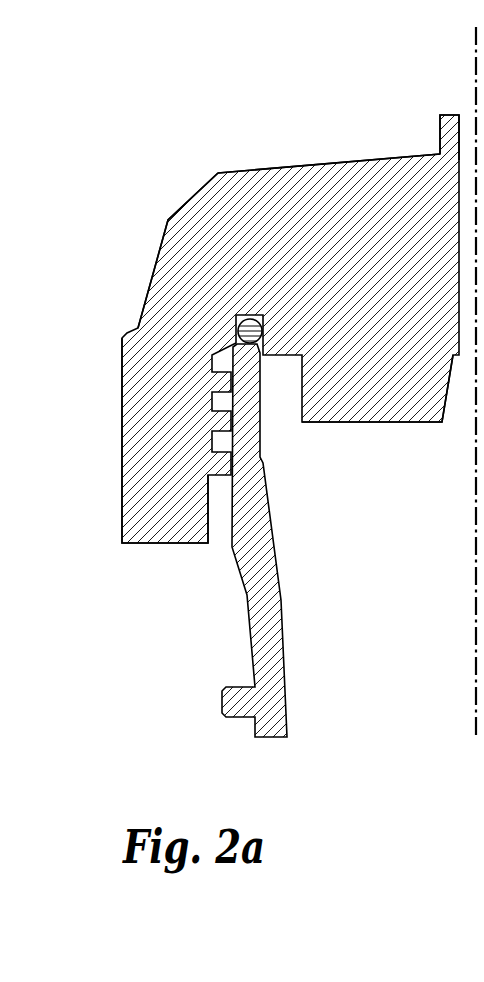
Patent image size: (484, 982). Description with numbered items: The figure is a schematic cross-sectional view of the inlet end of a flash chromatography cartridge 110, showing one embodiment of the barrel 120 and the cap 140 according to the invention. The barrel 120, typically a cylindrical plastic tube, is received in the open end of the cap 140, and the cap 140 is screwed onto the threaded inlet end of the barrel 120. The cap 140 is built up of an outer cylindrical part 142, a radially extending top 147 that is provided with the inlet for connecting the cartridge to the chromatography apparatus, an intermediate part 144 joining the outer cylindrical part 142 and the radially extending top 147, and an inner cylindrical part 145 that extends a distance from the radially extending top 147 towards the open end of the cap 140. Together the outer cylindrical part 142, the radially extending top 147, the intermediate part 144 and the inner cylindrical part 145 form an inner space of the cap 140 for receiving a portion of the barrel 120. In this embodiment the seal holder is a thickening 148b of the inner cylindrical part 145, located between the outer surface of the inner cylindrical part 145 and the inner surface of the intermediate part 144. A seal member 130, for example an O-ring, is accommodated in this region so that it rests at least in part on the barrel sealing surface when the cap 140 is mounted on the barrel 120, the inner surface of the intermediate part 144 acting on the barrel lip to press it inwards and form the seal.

The cartridge 110 is at (143, 90).
The barrel 120 is at (255, 728).
The seal member 130 is at (251, 318).
The cap 140 is at (237, 143).
The outer cylindrical part 142 is at (117, 543).
The intermediate part 144 is at (162, 217).
The inner cylindrical part 145 is at (385, 422).
The radially extending top 147 is at (373, 157).
The thickening 148b is at (300, 260).